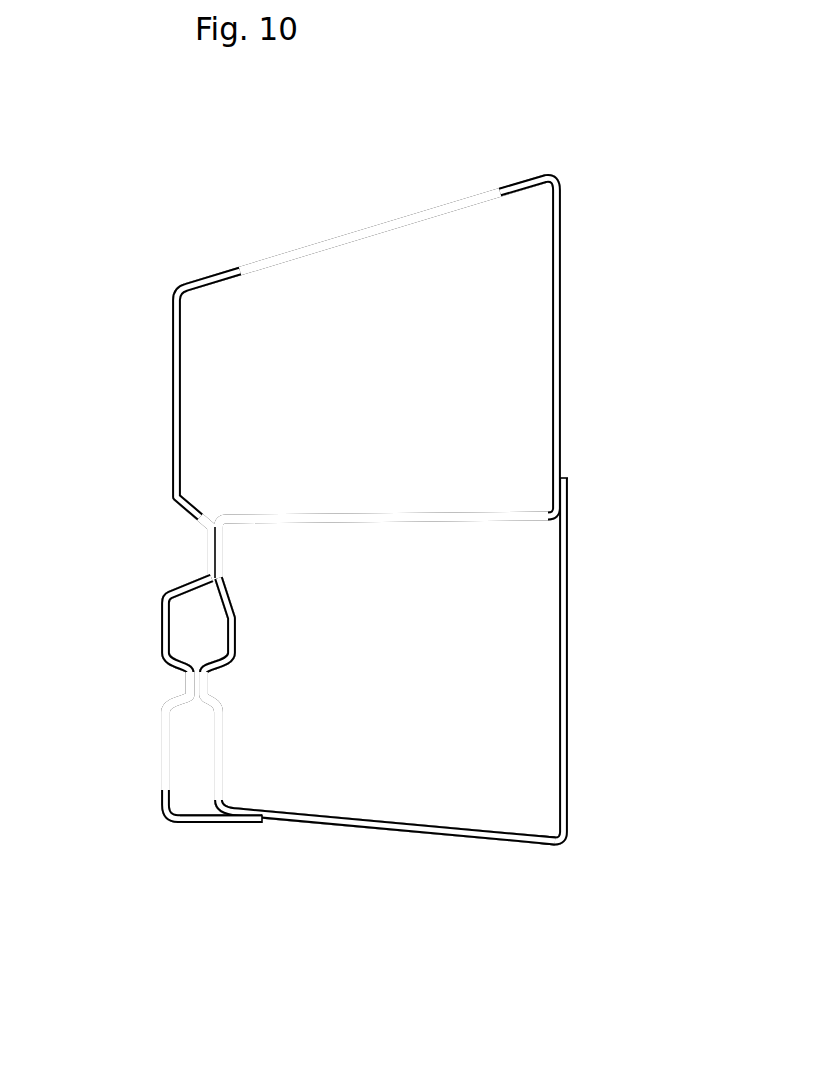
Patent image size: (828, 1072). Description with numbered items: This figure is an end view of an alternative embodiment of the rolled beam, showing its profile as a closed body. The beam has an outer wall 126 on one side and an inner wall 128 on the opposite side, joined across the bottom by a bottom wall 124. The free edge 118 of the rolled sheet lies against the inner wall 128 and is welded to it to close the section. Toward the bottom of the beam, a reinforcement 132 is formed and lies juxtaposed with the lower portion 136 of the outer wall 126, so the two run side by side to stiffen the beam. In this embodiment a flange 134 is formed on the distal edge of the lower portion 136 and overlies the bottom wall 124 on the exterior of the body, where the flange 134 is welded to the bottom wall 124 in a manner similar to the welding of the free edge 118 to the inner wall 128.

The free edge 118 is at (566, 478).
The bottom wall 124 is at (389, 822).
The outer wall 126 is at (173, 393).
The inner wall 128 is at (560, 426).
The reinforcement 132 is at (237, 637).
The flange 134 is at (210, 822).
The lower portion 136 is at (162, 637).